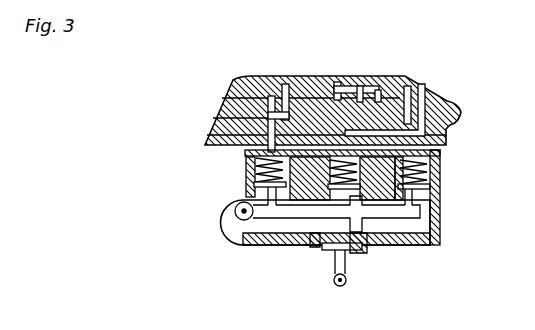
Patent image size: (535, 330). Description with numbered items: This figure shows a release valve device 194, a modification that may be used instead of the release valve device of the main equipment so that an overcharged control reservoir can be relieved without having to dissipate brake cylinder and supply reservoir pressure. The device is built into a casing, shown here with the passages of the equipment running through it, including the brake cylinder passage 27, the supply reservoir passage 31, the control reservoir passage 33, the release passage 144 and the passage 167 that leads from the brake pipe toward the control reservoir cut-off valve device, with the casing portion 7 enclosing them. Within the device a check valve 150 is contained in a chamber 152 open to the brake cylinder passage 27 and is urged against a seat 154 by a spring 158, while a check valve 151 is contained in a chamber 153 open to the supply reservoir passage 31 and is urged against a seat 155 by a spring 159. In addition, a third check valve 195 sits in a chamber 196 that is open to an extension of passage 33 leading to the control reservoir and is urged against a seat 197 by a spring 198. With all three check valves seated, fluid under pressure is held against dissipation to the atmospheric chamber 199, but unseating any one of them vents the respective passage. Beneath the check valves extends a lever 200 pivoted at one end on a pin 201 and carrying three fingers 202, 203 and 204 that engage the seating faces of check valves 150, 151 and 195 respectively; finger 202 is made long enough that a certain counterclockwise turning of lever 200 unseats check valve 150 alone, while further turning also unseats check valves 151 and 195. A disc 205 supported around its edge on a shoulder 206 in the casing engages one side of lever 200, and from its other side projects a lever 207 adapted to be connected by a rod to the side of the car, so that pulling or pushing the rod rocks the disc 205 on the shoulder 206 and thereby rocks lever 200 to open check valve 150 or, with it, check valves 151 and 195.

The valve body 7 is at (455, 88).
The brake cylinder passage 27 is at (262, 86).
The supply reservoir passage 31 is at (343, 82).
The control reservoir passage 33 is at (404, 92).
The release passage 144 is at (213, 137).
The check valve 150 is at (254, 184).
The check valve 151 is at (380, 247).
The chamber 152 is at (255, 165).
The chamber 153 is at (400, 240).
The seat 154 is at (234, 206).
The seat 155 is at (300, 222).
The spring 158 is at (248, 176).
The spring 159 is at (374, 218).
The passage 167 is at (218, 118).
The release valve device 194 is at (422, 242).
The check valve 195 is at (434, 185).
The chamber 196 is at (428, 162).
The seat 197 is at (430, 193).
The spring 198 is at (440, 147).
The atmospheric chamber 199 is at (425, 238).
The lever 200 is at (378, 200).
The pin 201 is at (252, 232).
The finger 202 is at (270, 218).
The finger 203 is at (326, 212).
The finger 204 is at (420, 223).
The disc 205 is at (333, 250).
The shoulder 206 is at (346, 252).
The lever 207 is at (343, 286).